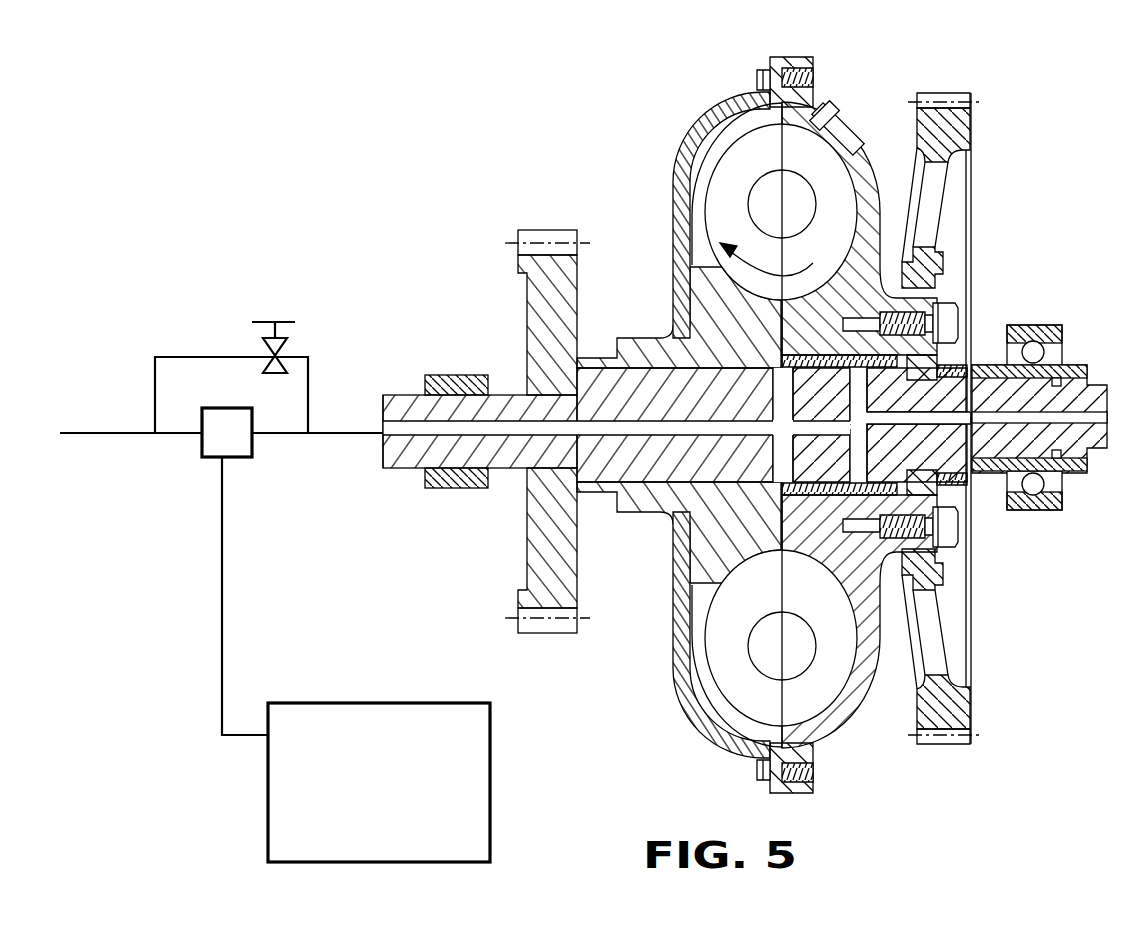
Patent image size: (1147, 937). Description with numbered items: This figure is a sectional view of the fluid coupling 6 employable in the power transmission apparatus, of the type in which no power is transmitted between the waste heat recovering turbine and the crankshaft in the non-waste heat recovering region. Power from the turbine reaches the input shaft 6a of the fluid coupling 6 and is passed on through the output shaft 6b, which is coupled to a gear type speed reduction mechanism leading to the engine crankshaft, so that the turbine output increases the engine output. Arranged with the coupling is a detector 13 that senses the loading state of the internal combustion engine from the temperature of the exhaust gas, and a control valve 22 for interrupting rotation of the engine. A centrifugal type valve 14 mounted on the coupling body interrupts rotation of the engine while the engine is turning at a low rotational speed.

The fluid coupling 6 is at (742, 409).
The input shaft 6a is at (1085, 378).
The output shaft 6b is at (397, 400).
The detector 13 is at (473, 753).
The centrifugal type valve 14 is at (817, 108).
The control valve 22 is at (237, 447).